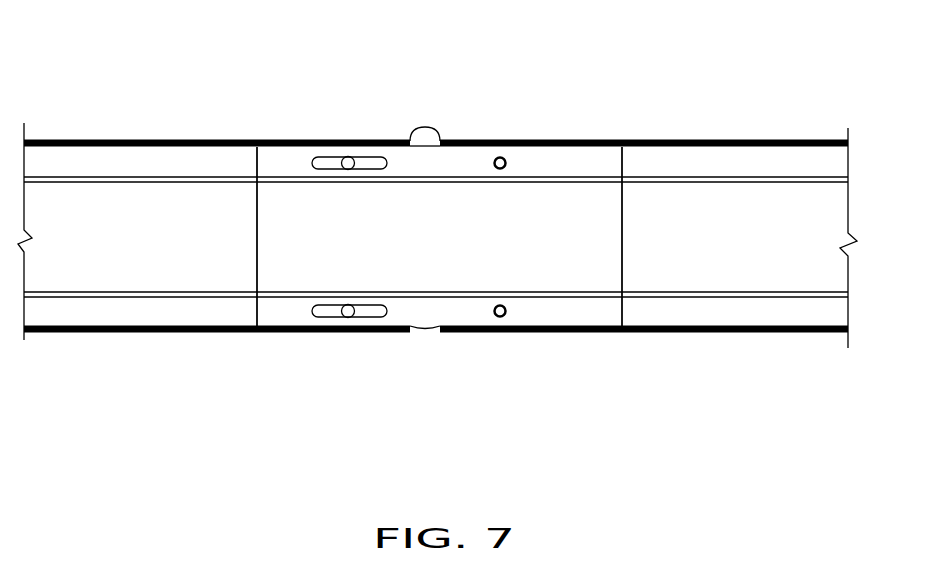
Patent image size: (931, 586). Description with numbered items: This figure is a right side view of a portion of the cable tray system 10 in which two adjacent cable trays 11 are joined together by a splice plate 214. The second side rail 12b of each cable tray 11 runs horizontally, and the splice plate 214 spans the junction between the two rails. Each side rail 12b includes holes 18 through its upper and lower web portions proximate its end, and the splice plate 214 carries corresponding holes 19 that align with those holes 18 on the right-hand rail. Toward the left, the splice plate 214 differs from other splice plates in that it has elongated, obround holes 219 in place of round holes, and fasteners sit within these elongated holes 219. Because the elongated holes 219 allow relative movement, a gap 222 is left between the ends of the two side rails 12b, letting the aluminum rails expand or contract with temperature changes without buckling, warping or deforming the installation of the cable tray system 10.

The cable tray system 10 is at (436, 52).
The cable tray 11 is at (153, 110).
The second side rail 12b is at (62, 308).
The splice plate 214 is at (287, 312).
The elongated hole 219 is at (320, 152).
The hole 19 is at (345, 160).
The hole 18 is at (505, 158).
The gap 222 is at (425, 127).